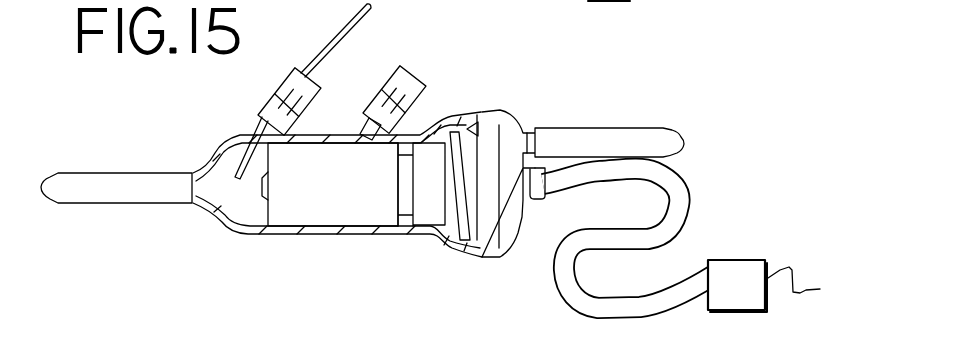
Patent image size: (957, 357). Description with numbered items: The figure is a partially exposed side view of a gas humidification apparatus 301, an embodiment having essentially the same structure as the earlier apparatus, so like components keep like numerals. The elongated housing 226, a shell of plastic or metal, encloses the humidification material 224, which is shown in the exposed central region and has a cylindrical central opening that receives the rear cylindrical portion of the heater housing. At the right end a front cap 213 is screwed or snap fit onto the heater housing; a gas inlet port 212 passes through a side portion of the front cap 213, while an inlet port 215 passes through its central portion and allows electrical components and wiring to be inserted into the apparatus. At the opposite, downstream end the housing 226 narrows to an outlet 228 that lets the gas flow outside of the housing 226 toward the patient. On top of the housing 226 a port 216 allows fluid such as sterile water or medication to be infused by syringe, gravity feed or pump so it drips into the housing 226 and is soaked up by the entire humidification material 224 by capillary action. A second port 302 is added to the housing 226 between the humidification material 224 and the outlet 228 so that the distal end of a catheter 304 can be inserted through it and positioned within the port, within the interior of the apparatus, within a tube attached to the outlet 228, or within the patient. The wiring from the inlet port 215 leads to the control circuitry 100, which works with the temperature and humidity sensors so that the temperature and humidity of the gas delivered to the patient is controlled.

The control circuitry 100 is at (758, 295).
The gas inlet port 212 is at (523, 128).
The front cap 213 is at (499, 112).
The inlet port 215 is at (536, 199).
The port 216 is at (404, 76).
The humidification material 224 is at (288, 215).
The housing 226 is at (339, 235).
The outlet 228 is at (196, 205).
The gas humidification apparatus 301 is at (495, 87).
The second port 302 is at (289, 70).
The catheter 304 is at (338, 42).